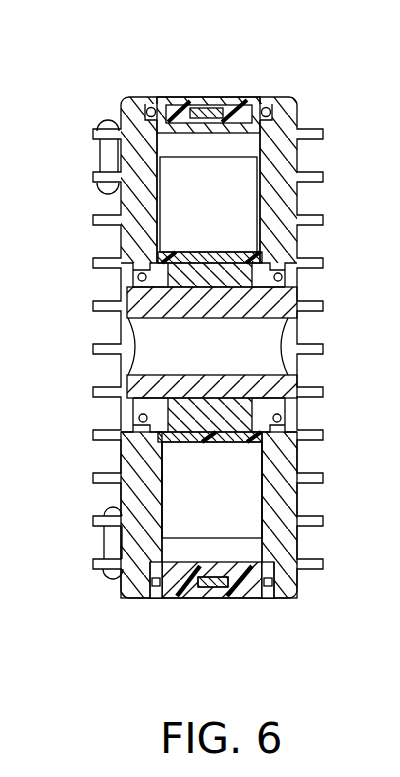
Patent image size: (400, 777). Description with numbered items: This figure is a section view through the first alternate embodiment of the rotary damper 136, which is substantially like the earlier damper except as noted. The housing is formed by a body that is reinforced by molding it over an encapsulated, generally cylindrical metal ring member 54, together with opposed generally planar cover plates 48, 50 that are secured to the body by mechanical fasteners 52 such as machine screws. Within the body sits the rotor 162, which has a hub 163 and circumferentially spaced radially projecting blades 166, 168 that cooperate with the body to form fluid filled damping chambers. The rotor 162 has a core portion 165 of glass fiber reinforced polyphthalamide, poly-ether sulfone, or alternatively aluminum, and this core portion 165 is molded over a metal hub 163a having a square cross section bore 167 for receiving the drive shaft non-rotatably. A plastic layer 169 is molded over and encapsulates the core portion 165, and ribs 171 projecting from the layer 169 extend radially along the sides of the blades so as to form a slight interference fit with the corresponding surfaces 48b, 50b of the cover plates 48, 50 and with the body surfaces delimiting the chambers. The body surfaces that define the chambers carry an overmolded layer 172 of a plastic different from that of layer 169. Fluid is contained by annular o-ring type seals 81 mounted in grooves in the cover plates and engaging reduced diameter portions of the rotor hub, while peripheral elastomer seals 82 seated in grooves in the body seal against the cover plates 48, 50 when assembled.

The rotary damper 136 is at (177, 85).
The metal ring member 54 is at (204, 98).
The cover plate 48 is at (295, 98).
The cover plate surface 48b is at (268, 530).
The rotor blade 168 is at (233, 178).
The plastic layer 169 is at (205, 255).
The cooling fins 171 is at (150, 206).
The cover plate surface 50b is at (152, 235).
The hub 163 is at (262, 270).
The metal hub 163a is at (270, 405).
The o-ring type seal 81 is at (284, 278).
The square cross section bore 167 is at (292, 330).
The core portion 165 is at (262, 440).
The rotor blade 166 is at (235, 530).
The rotor 162 is at (178, 540).
The mechanical fastener 52 is at (103, 540).
The cover plate 50 is at (127, 598).
The peripheral elastomer seal 82 is at (167, 598).
The overmolded layer 172 is at (216, 592).